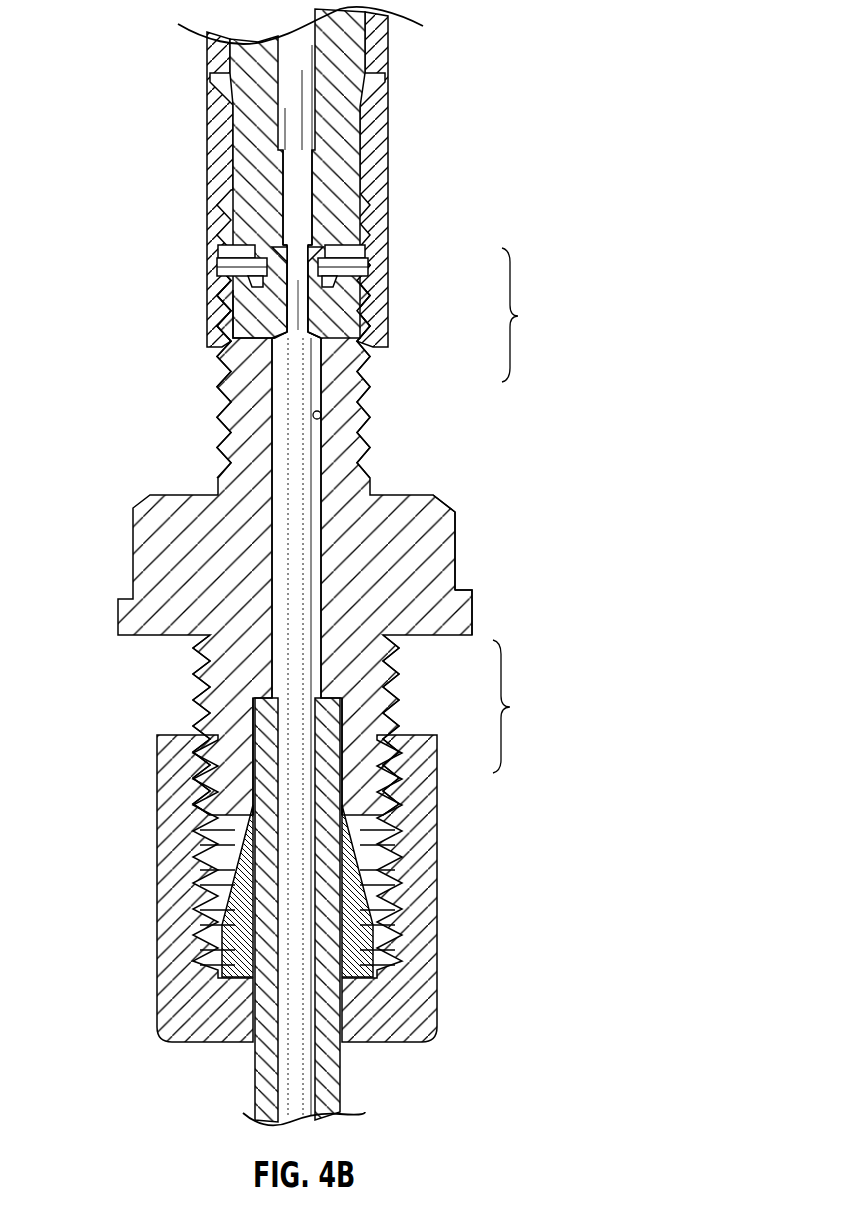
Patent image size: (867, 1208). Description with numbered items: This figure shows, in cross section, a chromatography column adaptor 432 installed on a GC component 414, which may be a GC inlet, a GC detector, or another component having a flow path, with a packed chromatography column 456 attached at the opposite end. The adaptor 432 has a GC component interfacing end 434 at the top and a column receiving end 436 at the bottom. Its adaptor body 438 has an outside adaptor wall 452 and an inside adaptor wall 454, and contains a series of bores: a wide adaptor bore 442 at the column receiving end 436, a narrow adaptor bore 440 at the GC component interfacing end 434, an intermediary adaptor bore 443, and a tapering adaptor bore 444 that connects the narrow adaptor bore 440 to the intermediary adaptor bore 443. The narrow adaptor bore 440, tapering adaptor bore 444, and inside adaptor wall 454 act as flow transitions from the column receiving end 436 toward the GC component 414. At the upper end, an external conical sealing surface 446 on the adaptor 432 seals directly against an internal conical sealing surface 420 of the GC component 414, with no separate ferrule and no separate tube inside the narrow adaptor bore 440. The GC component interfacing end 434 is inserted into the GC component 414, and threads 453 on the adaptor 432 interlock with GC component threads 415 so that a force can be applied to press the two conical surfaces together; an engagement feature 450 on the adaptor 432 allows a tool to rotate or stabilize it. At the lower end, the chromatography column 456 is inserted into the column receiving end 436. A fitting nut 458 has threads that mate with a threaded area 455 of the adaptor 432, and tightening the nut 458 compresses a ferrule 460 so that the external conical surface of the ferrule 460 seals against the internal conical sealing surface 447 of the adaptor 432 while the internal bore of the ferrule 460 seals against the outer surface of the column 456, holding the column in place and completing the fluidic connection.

The GC component 414 is at (350, 88).
The external conical sealing surface 446 is at (280, 262).
The internal conical sealing surface 420 is at (317, 262).
The GC component threads 415 is at (213, 277).
The narrow adaptor bore 440 is at (236, 322).
The threads 453 is at (220, 362).
The tapering adaptor bore 444 is at (290, 292).
The GC component interfacing end 434 is at (537, 315).
The inside adaptor wall 454 is at (321, 413).
The outside adaptor wall 452 is at (368, 486).
The chromatography column adaptor 432 is at (437, 513).
The intermediary adaptor bore 443 is at (283, 527).
The adaptor body 438 is at (350, 532).
The engagement feature 450 is at (457, 592).
The column receiving end 436 is at (377, 725).
The wide adaptor bore 442 is at (250, 752).
The threaded area 455 is at (383, 803).
The internal conical sealing surface 447 is at (252, 843).
The ferrule 460 is at (240, 912).
The fitting nut 458 is at (403, 985).
The chromatography column 456 is at (305, 1085).